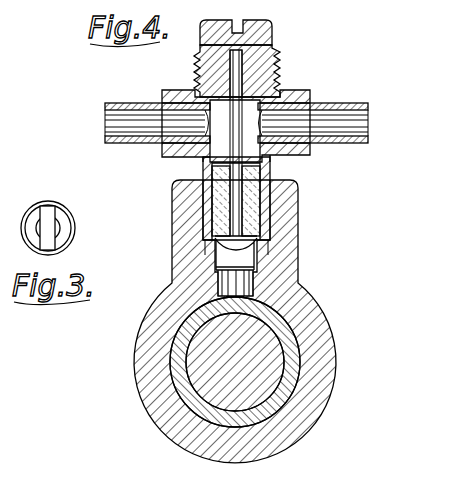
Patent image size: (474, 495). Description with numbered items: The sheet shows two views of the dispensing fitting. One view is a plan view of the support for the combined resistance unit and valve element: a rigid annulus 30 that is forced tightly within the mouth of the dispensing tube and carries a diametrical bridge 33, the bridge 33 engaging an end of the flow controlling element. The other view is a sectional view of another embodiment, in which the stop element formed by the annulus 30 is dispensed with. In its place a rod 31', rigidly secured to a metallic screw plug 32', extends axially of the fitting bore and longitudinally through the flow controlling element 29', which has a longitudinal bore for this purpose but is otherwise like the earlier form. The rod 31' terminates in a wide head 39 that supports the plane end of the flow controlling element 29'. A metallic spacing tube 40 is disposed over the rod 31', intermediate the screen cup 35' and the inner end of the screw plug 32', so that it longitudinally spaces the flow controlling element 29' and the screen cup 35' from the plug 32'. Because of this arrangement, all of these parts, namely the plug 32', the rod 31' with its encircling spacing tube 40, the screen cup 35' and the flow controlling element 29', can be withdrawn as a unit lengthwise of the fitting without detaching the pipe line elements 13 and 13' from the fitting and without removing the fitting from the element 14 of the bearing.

In FIG. 4, the pipe line element 13 is at (157, 109).
In FIG. 4, the pipe line element 13' is at (313, 111).
In FIG. 4, the element of the bearing 14 is at (176, 296).
In FIG. 4, the flow controlling element 29' is at (197, 201).
In FIG. 3, the rigid annulus 30 is at (68, 226).
In FIG. 4, the rod 31' is at (261, 69).
In FIG. 4, the metallic plug 32' is at (265, 29).
In FIG. 3, the diametrical bridge 33 is at (54, 209).
In FIG. 4, the screen cup 35' is at (201, 206).
In FIG. 4, the wide head 39 is at (214, 244).
In FIG. 4, the metallic spacing tube 40 is at (258, 100).